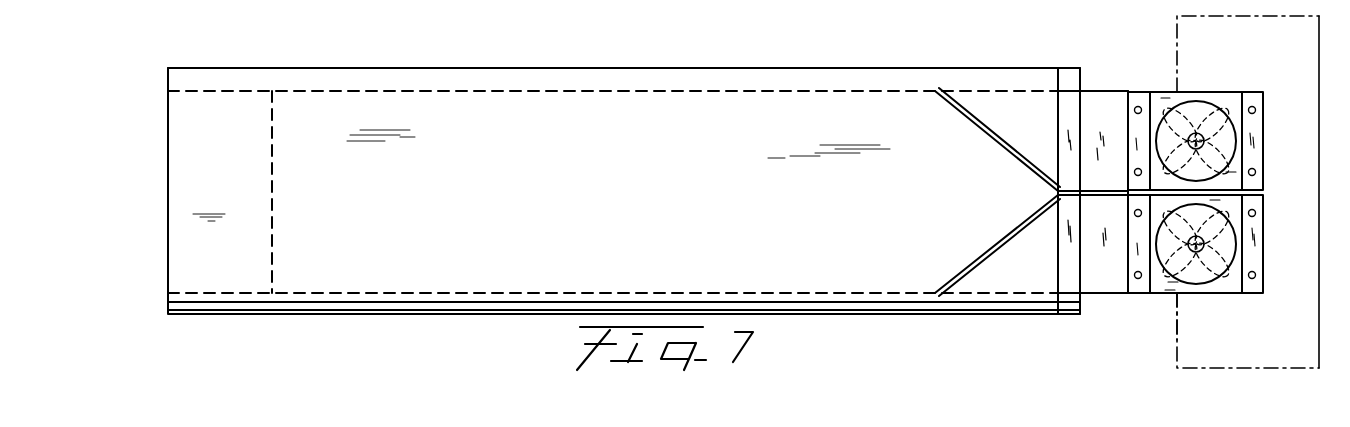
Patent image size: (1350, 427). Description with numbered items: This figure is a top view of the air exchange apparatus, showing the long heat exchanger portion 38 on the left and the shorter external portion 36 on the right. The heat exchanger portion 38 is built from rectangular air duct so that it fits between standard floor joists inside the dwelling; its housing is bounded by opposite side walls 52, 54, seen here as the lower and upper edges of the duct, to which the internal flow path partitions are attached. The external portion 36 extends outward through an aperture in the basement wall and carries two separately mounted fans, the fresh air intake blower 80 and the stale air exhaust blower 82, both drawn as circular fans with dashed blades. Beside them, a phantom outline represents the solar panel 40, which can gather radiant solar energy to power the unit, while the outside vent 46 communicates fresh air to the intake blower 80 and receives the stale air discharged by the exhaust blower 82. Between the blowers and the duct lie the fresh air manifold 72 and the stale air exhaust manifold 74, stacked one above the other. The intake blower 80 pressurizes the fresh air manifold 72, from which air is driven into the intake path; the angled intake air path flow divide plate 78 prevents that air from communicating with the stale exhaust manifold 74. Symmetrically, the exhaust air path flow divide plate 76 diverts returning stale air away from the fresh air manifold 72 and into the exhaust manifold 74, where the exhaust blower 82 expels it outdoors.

The external portion 36 is at (1139, 53).
The heat exchanger portion 38 is at (606, 58).
The solar panel 40 is at (1314, 50).
The outside vent 46 is at (1172, 300).
The side wall 52 is at (395, 296).
The side wall 54 is at (387, 90).
The fresh air manifold 72 is at (1105, 283).
The stale air exhaust manifold 74 is at (1100, 97).
The exhaust air path flow divide plate 76 is at (980, 262).
The intake air path flow divide plate 78 is at (985, 131).
The fresh air intake blower 80 is at (1165, 252).
The stale air exhaust blower 82 is at (1225, 100).